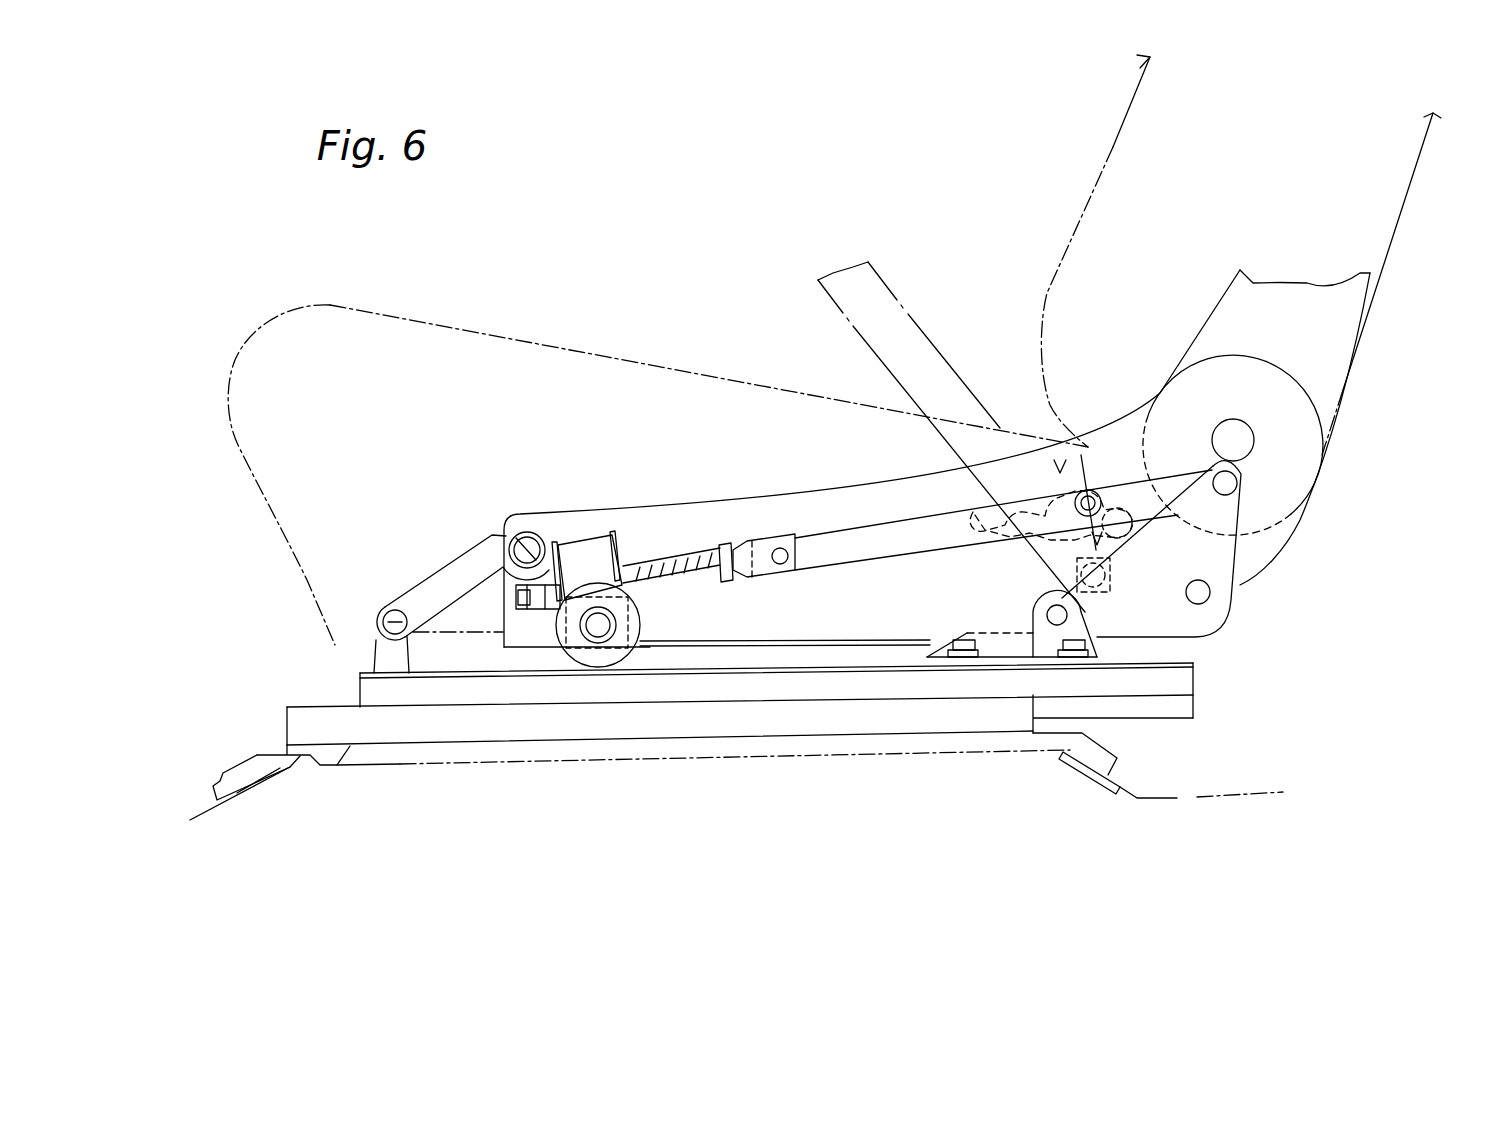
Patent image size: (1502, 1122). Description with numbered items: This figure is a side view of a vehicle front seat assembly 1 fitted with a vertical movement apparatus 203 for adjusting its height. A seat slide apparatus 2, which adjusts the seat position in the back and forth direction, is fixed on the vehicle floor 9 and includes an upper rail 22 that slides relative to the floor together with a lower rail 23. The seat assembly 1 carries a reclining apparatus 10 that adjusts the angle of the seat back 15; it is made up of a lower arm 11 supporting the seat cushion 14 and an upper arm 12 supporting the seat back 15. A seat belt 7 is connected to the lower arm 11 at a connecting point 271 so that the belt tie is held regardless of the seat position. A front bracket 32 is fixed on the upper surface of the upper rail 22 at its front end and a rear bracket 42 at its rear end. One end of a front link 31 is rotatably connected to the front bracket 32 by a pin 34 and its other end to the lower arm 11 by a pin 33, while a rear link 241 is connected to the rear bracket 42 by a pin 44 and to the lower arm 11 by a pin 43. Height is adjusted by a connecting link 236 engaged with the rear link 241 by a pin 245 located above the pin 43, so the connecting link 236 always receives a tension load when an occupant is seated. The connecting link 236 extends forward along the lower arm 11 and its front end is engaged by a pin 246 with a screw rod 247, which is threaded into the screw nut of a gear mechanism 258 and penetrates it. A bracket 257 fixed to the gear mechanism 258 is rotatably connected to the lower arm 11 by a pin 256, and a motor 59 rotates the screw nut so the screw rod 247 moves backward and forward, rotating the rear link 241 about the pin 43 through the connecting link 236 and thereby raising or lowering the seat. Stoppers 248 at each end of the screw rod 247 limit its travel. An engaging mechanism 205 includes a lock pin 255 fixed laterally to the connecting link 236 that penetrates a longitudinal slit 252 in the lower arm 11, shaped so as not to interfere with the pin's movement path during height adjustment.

The front seat assembly 1 is at (980, 227).
The seat slide apparatus 2 is at (637, 743).
The seat belt 7 is at (899, 300).
The vehicle floor 9 is at (1177, 798).
The reclining apparatus 10 is at (1157, 333).
The lower arm 11 is at (742, 507).
The upper arm 12 is at (1328, 358).
The seat cushion 14 is at (647, 527).
The seat back 15 is at (1118, 142).
The upper rail 22 is at (697, 690).
The lower rail 23 is at (737, 720).
The front link 31 is at (428, 585).
The front bracket 32 is at (383, 655).
The pin 33 is at (490, 533).
The pin 34 is at (383, 623).
The rear bracket 42 is at (993, 647).
The pin 43 is at (1198, 592).
The pin 44 is at (1053, 622).
The motor 59 is at (575, 592).
The vertical movement apparatus 203 is at (615, 470).
The engaging mechanism 205 is at (1050, 450).
The connecting link 236 is at (847, 555).
The rear link 241 is at (1207, 563).
The pin 245 is at (1237, 483).
The pin 246 is at (782, 578).
The screw rod 247 is at (672, 560).
The stoppers 248 is at (516, 545).
The slit 252 is at (957, 513).
The lock pin 255 is at (1083, 493).
The pin 256 is at (527, 600).
The bracket 257 is at (545, 607).
The gear mechanism 258 is at (570, 555).
The connecting point 271 is at (1110, 583).